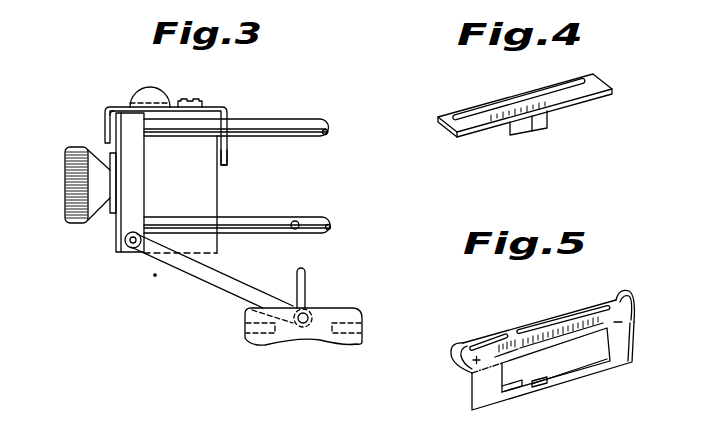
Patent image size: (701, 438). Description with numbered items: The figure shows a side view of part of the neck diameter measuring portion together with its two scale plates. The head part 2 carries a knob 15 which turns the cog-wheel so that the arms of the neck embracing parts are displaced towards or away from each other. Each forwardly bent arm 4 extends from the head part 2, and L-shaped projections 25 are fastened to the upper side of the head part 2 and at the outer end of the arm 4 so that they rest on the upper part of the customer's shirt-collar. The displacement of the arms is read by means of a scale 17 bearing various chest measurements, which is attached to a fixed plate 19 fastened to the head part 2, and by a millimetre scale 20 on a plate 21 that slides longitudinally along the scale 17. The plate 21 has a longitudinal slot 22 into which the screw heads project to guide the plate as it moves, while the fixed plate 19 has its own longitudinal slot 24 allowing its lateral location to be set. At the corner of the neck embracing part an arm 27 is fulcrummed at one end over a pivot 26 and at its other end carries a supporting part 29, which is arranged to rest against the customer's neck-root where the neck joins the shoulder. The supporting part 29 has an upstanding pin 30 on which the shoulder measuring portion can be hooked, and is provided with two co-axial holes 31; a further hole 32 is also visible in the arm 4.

In FIG. 3, the head part 2 is at (125, 215).
In FIG. 3, the forwardly bent arm 4 is at (277, 138).
In FIG. 3, the knob 15 is at (65, 196).
In FIG. 4, the scale 17 is at (493, 121).
In FIG. 4, the plate 19 is at (597, 88).
In FIG. 5, the millimetre scale 20 is at (557, 332).
In FIG. 3, the plate 21 is at (122, 107).
In FIG. 5, the plate 21 is at (472, 384).
In FIG. 5, the longitudinal slot 22 is at (497, 338).
In FIG. 4, the longitudinal slot 24 is at (462, 117).
In FIG. 3, the L-shaped projection 25 is at (228, 150).
In FIG. 3, the pivot 26 is at (132, 249).
In FIG. 3, the arm 27 is at (198, 272).
In FIG. 3, the supporting part 29 is at (288, 332).
In FIG. 3, the upstanding pin 30 is at (307, 282).
In FIG. 3, the co-axial hole 31 is at (342, 317).
In FIG. 3, the hole 32 is at (303, 216).